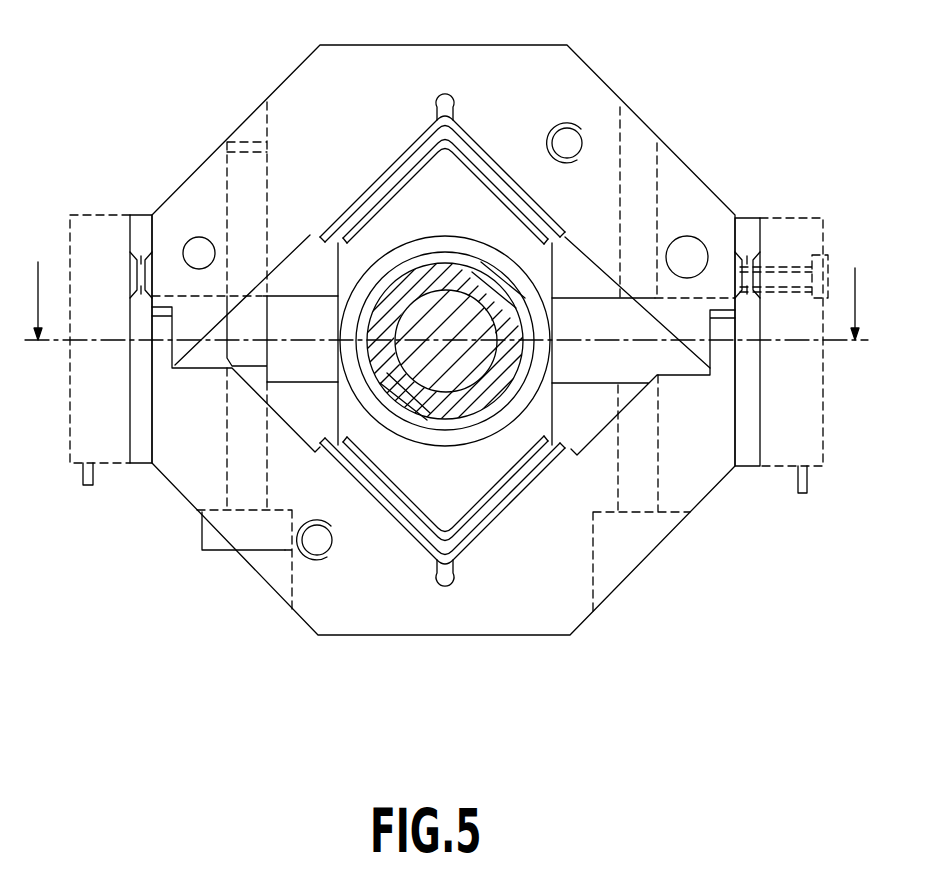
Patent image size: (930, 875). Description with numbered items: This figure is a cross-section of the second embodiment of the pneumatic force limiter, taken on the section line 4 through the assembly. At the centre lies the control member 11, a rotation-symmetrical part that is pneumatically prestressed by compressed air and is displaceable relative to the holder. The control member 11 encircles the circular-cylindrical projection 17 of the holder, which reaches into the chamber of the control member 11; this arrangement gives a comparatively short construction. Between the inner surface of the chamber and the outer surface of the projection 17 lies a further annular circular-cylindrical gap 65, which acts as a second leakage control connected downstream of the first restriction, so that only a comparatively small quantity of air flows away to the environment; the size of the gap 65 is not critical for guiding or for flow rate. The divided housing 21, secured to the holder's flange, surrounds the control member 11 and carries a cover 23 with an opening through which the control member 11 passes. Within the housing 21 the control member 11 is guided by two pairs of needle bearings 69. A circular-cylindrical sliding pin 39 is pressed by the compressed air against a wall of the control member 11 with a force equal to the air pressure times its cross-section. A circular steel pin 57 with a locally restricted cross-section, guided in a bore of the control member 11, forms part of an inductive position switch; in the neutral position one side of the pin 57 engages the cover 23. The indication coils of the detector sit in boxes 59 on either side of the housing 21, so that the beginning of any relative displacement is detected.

The section line 4 is at (446, 283).
The control member 11 is at (468, 248).
The circular-cylindrical projection 17 is at (423, 283).
The divided housing 21 is at (507, 76).
The cover 23 is at (138, 452).
The sliding pin 39 is at (462, 370).
The steel pin 57 is at (300, 317).
The boxes 59 is at (68, 410).
The annular circular-cylindrical gap 65 is at (425, 417).
The needle bearings 69 is at (467, 123).